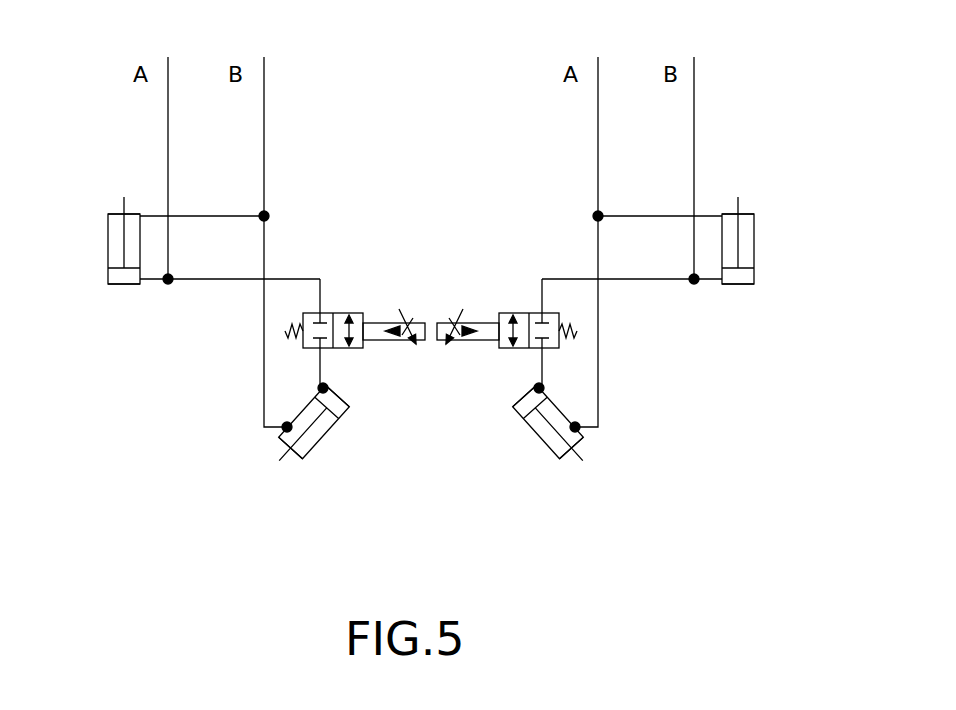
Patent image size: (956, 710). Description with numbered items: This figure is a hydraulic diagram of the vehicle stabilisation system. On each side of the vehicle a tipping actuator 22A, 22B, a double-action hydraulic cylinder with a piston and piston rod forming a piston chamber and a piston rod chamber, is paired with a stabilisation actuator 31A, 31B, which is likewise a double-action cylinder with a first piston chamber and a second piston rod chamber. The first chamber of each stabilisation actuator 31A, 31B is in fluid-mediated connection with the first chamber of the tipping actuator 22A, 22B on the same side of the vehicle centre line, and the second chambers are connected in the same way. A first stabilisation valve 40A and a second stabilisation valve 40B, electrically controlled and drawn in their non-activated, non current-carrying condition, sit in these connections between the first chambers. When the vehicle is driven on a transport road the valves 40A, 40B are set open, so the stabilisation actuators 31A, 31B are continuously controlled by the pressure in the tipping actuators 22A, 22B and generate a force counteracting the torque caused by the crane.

The stabilisation actuator 31A is at (108, 256).
The stabilisation actuator 31B is at (754, 233).
The first stabilisation valve 40A is at (343, 312).
The second stabilisation valve 40B is at (519, 312).
The tipping actuator 22A is at (325, 435).
The tipping actuator 22B is at (540, 435).